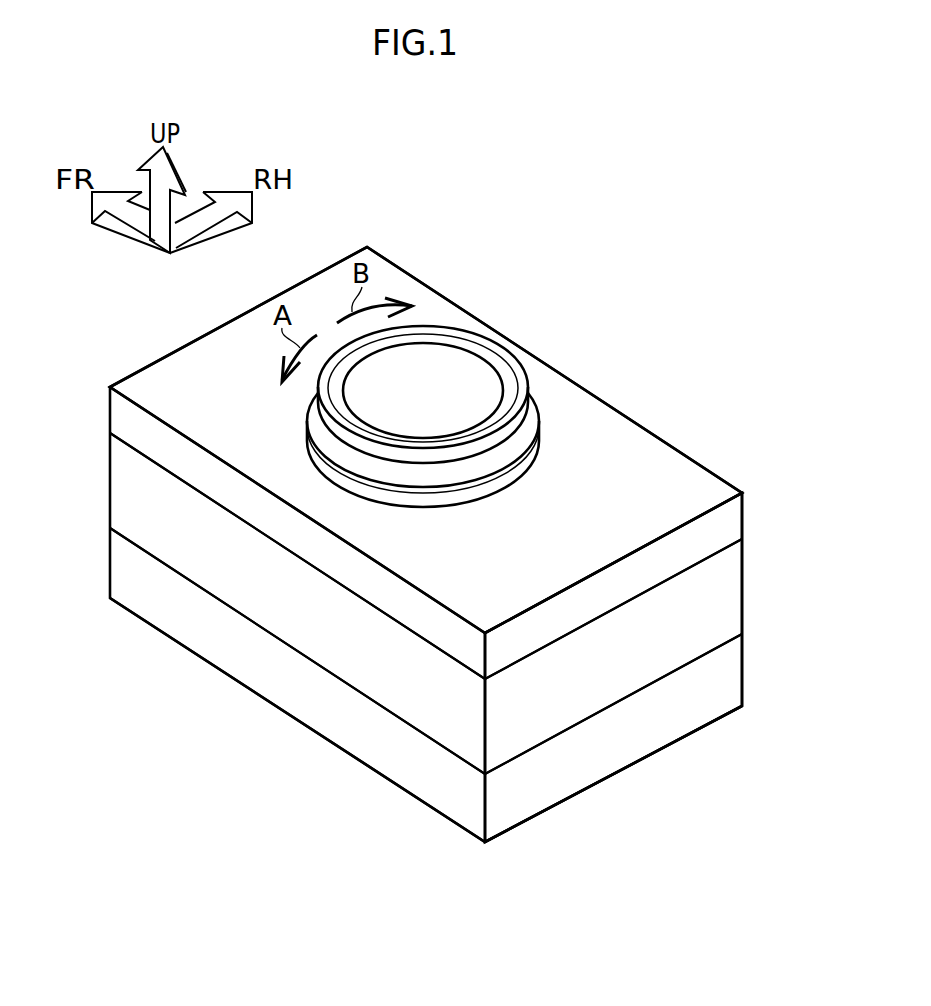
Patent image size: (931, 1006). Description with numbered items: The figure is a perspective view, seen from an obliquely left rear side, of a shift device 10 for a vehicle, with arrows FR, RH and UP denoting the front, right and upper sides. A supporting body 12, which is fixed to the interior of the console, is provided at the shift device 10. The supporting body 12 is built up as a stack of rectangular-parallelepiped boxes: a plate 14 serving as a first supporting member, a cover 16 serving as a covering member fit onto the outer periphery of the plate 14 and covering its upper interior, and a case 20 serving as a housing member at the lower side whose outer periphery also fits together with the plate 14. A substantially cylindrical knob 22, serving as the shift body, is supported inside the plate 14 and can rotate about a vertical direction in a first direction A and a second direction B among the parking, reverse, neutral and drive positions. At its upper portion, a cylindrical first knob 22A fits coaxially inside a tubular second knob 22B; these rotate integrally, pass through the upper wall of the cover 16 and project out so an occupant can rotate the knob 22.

The shift device 10 is at (583, 313).
The supporting body 12 is at (439, 291).
The plate 14 is at (742, 592).
The cover 16 is at (683, 481).
The case 20 is at (742, 669).
The knob 22 is at (472, 332).
The first knob 22A is at (473, 393).
The second knob 22B is at (513, 440).